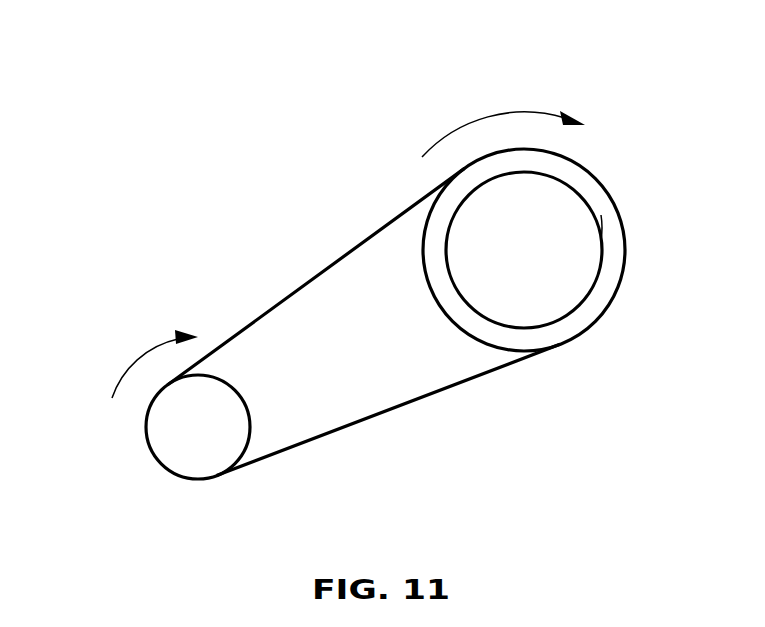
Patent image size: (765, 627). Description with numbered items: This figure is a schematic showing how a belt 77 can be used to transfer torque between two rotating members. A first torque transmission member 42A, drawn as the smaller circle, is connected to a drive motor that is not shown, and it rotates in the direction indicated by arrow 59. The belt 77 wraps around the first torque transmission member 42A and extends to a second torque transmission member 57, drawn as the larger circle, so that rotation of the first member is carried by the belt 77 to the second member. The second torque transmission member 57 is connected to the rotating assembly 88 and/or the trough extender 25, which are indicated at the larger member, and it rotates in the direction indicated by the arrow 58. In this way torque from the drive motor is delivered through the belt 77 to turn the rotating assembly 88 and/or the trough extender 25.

The second torque transmission member 57 is at (613, 303).
The trough extender 25 is at (602, 233).
The rotating assembly 88 is at (597, 212).
The first torque transmission member 42A is at (147, 442).
The belt 77 is at (348, 425).
The arrow 58 is at (490, 113).
The arrow 59 is at (147, 350).